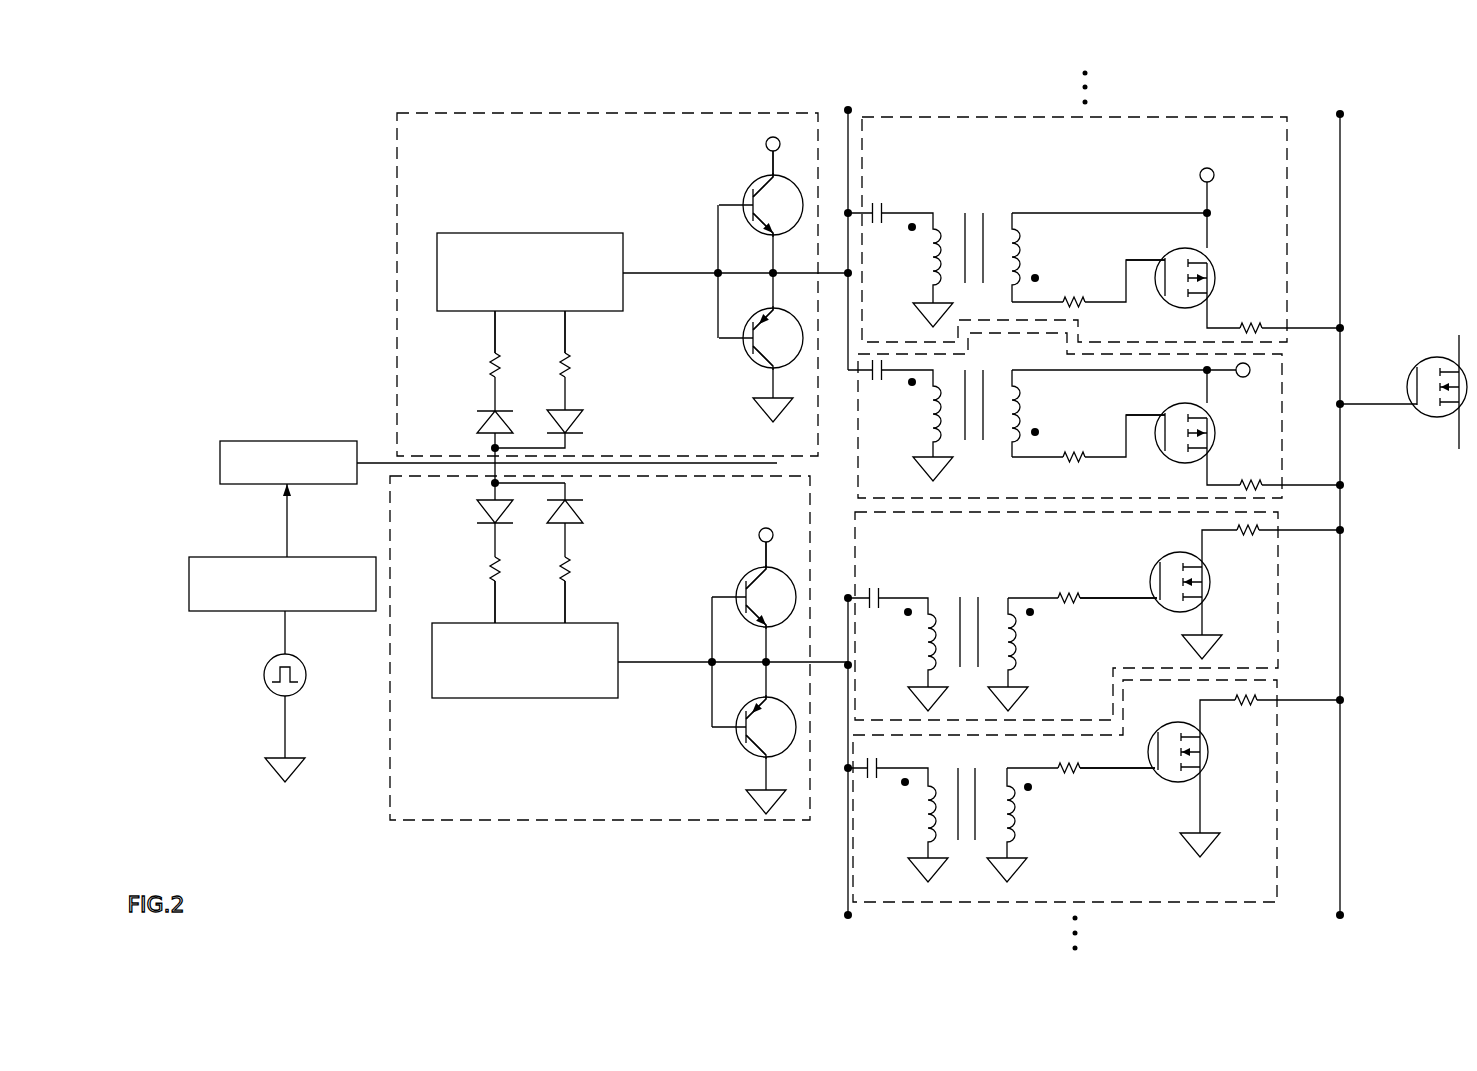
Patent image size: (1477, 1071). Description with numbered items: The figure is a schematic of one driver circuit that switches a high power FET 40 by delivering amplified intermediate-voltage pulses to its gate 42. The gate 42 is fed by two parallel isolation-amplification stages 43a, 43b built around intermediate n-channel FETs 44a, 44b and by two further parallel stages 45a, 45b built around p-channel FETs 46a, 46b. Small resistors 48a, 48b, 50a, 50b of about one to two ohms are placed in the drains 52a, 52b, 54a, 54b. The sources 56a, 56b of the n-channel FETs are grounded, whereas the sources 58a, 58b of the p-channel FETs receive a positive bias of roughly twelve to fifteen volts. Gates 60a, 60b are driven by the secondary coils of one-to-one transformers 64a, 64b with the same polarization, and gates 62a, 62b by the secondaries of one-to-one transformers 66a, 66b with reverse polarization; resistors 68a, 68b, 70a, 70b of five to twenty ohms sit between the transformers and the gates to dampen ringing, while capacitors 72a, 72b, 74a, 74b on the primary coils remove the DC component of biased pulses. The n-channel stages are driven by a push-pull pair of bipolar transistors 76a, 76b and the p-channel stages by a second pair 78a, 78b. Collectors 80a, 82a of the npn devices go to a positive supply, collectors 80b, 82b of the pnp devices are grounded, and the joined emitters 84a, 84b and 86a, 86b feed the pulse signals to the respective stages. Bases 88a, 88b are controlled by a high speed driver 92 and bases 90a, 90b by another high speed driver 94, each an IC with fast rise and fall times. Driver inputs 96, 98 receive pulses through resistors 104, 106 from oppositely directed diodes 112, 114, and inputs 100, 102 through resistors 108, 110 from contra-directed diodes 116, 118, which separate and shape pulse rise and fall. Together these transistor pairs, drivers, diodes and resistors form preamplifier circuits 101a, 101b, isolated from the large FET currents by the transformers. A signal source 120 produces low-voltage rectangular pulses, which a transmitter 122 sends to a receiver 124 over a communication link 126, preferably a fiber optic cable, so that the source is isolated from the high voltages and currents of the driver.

The high power FET 40 is at (1415, 368).
The gate 42 is at (1418, 410).
The isolation-amplification stage 43a is at (848, 522).
The isolation-amplification stage 43b is at (1130, 905).
The isolation-amplification stage 45a is at (852, 431).
The isolation-amplification stage 45b is at (1152, 117).
The n-channel FET 44a is at (1160, 565).
The n-channel FET 44b is at (1180, 782).
The p-channel FET 46a is at (1178, 462).
The p-channel FET 46b is at (1178, 307).
The resistor 48a is at (1250, 535).
The resistor 48b is at (1250, 705).
The resistor 50a is at (1245, 482).
The resistor 50b is at (1245, 325).
The drain 52a is at (1200, 555).
The drain 52b is at (1200, 730).
The drain 54a is at (1210, 455).
The drain 54b is at (1210, 298).
The source 56a is at (1205, 597).
The source 56b is at (1203, 770).
The source 58a is at (1202, 413).
The source 58b is at (1207, 255).
The gate 60a is at (1160, 600).
The gate 60b is at (1158, 770).
The gate 62a is at (1165, 413).
The gate 62b is at (1165, 258).
The transformer 64a is at (992, 598).
The transformer 64b is at (990, 778).
The transformer 66a is at (1000, 368).
The transformer 66b is at (1003, 208).
The resistor 68a is at (1072, 596).
The resistor 68b is at (1058, 778).
The resistor 70a is at (1074, 455).
The resistor 70b is at (1074, 298).
The capacitor 72a is at (880, 595).
The capacitor 72b is at (878, 771).
The capacitor 74a is at (882, 372).
The capacitor 74b is at (882, 212).
The npn bipolar transistor 76a is at (789, 583).
The pnp bipolar transistor 76b is at (738, 706).
The npn bipolar transistor 78a is at (790, 228).
The pnp bipolar transistor 78b is at (785, 355).
The collector 80a is at (764, 568).
The collector 80b is at (766, 760).
The collector 82a is at (776, 178).
The collector 82b is at (768, 375).
The emitter 84a is at (770, 628).
The emitter 84b is at (767, 703).
The emitter 86a is at (770, 238).
The emitter 86b is at (770, 310).
The base 88a is at (737, 597).
The base 88b is at (735, 727).
The base 90a is at (748, 197).
The base 90b is at (750, 347).
The high speed driver 92 is at (510, 698).
The high speed driver 94 is at (534, 233).
The input 96 is at (567, 622).
The input 98 is at (497, 623).
The input 100 is at (572, 312).
The input 102 is at (502, 312).
The resistor 104 is at (567, 578).
The resistor 106 is at (490, 558).
The resistor 108 is at (575, 360).
The resistor 110 is at (490, 375).
The diode 112 is at (578, 500).
The diode 114 is at (478, 500).
The diode 116 is at (568, 432).
The diode 118 is at (478, 432).
The signal source 120 is at (265, 690).
The transmitter 122 is at (235, 612).
The receiver 124 is at (290, 440).
The communication link 126 is at (286, 540).
The preamplifier circuit 101a is at (537, 822).
The preamplifier circuit 101b is at (395, 162).